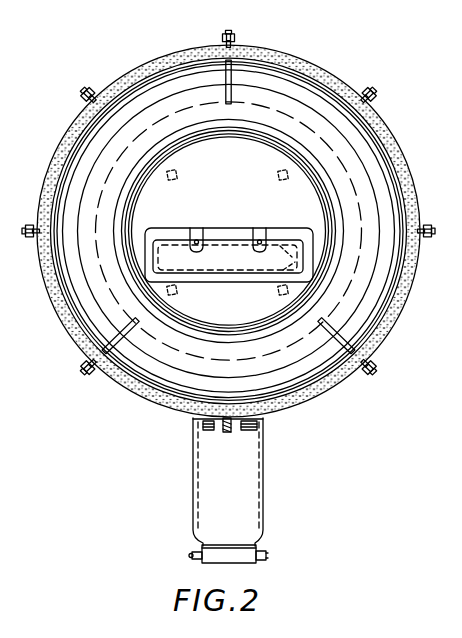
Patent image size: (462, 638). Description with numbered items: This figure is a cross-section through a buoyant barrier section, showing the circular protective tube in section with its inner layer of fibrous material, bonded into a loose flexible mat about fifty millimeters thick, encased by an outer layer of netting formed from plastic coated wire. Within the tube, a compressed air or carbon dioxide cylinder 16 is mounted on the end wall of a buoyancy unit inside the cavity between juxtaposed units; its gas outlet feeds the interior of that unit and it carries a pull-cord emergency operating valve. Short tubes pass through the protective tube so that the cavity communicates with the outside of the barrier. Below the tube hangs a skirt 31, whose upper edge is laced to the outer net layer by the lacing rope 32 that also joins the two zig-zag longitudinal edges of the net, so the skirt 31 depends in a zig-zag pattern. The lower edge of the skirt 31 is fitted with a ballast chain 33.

The cylinder 16 is at (257, 271).
The skirt 31 is at (227, 482).
The lacing rope 32 is at (208, 430).
The ballast chain 33 is at (199, 557).